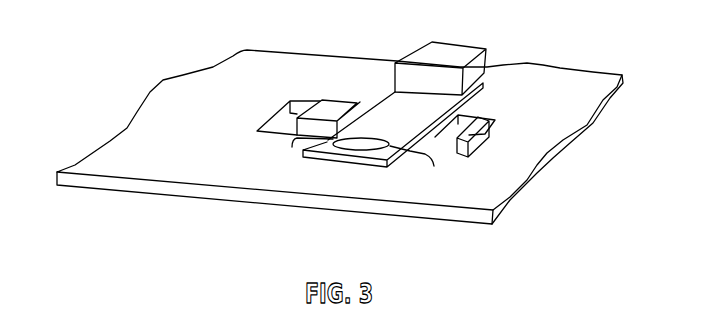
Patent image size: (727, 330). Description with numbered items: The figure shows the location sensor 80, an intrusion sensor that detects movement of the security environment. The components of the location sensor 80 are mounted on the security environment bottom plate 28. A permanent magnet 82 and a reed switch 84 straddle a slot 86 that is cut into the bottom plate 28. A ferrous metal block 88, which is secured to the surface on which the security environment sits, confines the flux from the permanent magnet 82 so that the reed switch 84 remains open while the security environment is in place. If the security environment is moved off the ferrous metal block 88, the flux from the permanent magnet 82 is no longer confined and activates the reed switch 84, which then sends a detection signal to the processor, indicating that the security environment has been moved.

The security environment bottom plate 28 is at (189, 164).
The location sensor 80 is at (335, 101).
The permanent magnet 82 is at (453, 57).
The reed switch 84 is at (340, 152).
The slot 86 is at (494, 124).
The ferrous metal block 88 is at (484, 97).